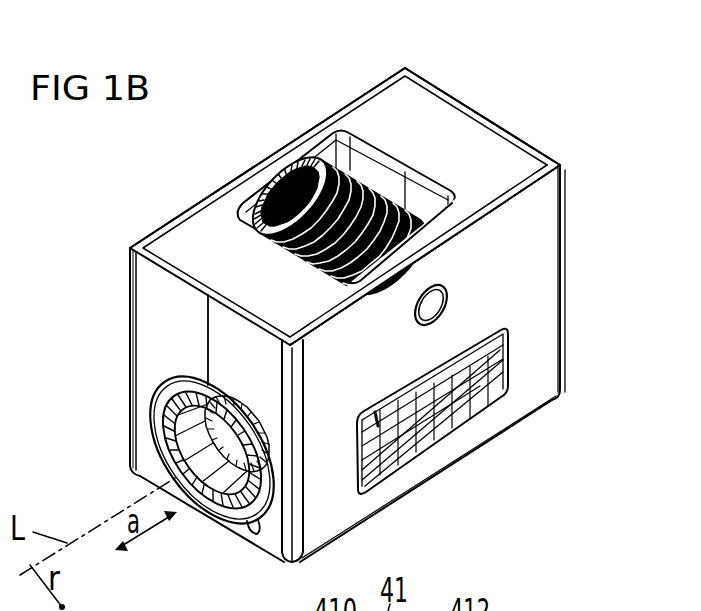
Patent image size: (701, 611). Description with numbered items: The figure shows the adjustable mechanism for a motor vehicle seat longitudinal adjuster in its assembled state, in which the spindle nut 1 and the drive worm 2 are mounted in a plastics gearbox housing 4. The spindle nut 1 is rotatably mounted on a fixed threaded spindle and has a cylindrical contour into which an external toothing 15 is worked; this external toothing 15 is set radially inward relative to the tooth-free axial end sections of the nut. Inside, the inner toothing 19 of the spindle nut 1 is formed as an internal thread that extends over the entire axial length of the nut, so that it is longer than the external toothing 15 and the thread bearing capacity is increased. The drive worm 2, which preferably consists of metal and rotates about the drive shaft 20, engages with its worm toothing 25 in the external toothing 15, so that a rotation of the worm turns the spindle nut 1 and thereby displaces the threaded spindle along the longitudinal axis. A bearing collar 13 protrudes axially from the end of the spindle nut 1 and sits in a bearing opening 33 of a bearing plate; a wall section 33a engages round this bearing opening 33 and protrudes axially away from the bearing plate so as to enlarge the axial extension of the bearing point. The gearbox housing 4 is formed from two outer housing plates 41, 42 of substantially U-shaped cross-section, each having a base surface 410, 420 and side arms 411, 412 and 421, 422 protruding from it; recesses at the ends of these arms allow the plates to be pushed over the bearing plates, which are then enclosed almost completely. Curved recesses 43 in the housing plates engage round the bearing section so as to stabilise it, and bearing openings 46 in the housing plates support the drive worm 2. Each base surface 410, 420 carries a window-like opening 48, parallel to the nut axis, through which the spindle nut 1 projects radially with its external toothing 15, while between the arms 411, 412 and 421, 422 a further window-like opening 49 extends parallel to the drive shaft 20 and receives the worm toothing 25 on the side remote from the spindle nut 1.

The spindle nut 1 is at (374, 424).
The drive worm 2 is at (278, 195).
The gearbox housing 4 is at (486, 100).
The bearing collar 13 is at (180, 405).
The external toothing 15 is at (423, 432).
The inner toothing 19 is at (213, 428).
The drive shaft 20 is at (452, 294).
The worm toothing 25 is at (313, 163).
The bearing opening 33 is at (213, 510).
The wall section 33a is at (252, 528).
The housing plate 41 is at (394, 66).
The housing plate 42 is at (567, 267).
The curved recess 43 is at (153, 395).
The bearing opening 46 is at (451, 284).
The window-like opening 48 is at (465, 415).
The window-like opening 49 is at (380, 157).
The base surface 410 is at (230, 175).
The side arm 411 is at (147, 328).
The side arm 412 is at (447, 92).
The base surface 420 is at (542, 373).
The side arm 421 is at (273, 533).
The side arm 422 is at (530, 145).